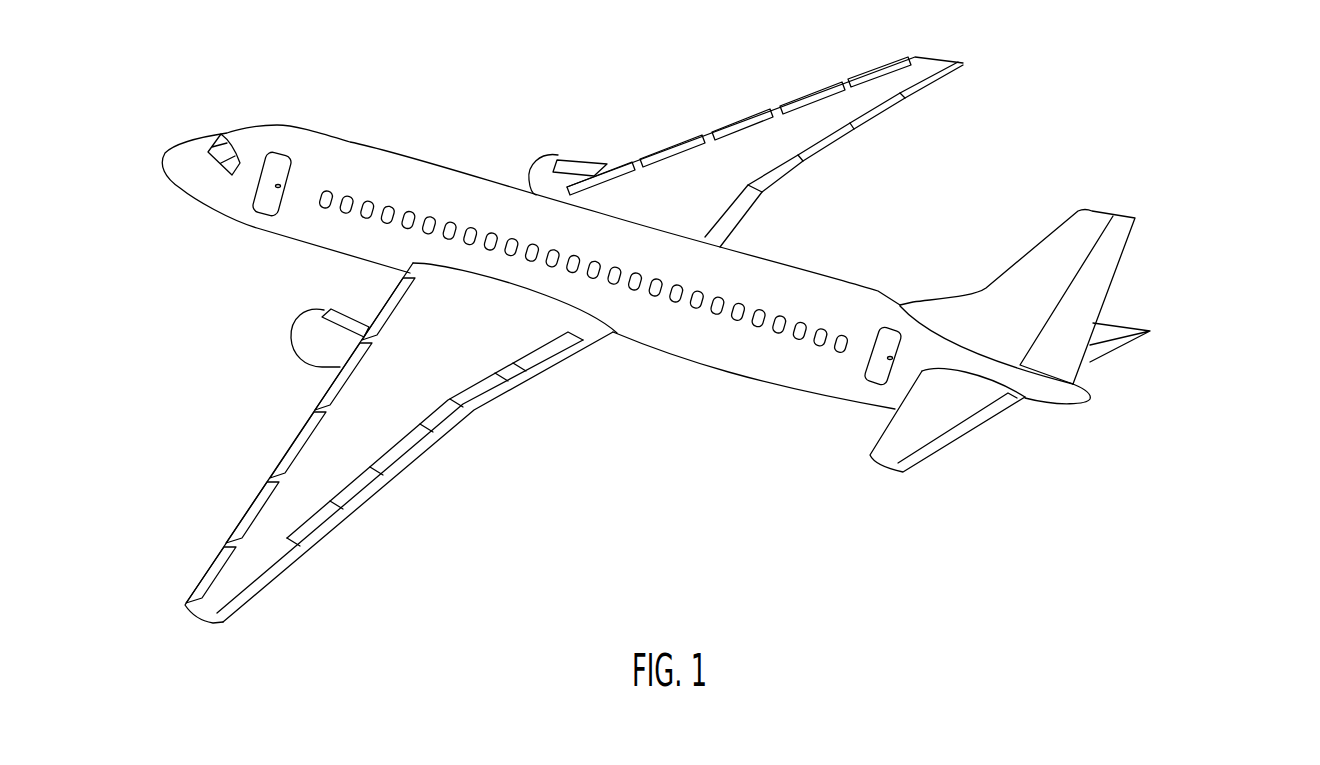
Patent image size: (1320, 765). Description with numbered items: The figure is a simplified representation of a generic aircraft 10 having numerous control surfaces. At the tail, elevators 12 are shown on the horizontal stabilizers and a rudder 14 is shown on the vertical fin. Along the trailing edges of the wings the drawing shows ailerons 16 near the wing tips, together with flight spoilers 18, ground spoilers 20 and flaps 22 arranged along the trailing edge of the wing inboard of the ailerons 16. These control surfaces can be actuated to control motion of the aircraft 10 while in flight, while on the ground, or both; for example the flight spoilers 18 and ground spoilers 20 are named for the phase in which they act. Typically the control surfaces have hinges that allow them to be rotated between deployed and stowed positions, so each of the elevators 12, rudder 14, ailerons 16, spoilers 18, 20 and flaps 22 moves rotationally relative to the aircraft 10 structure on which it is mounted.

The aircraft 10 is at (812, 580).
The elevators 12 is at (953, 443).
The rudder 14 is at (1098, 283).
The ailerons 16 is at (257, 580).
The flight spoilers 18 is at (373, 472).
The ground spoilers 20 is at (497, 378).
The flaps 22 is at (482, 398).